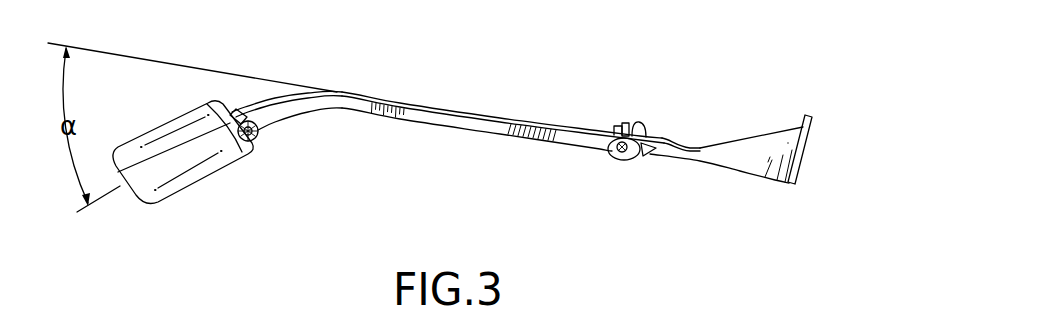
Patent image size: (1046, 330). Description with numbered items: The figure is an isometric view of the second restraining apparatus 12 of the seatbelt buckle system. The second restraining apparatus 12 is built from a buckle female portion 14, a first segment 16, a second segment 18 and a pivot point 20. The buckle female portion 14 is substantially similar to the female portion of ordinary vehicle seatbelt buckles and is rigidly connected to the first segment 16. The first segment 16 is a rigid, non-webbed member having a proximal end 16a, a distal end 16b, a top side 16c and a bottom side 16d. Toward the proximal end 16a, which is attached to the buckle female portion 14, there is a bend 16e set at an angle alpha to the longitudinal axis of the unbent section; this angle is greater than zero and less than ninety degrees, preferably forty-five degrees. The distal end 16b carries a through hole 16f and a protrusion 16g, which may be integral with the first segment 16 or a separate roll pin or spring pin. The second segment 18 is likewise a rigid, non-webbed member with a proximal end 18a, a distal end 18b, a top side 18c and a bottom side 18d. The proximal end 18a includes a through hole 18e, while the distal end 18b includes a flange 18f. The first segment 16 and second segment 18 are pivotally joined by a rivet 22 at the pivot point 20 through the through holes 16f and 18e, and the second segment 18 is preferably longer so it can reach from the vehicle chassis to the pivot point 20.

The second restraining apparatus 12 is at (460, 152).
The buckle female portion 14 is at (187, 173).
The first segment 16 is at (415, 115).
The proximal end 16a is at (261, 108).
The distal end 16b is at (588, 128).
The top side 16c is at (348, 103).
The bottom side 16d is at (395, 100).
The bend 16e is at (303, 89).
The through hole 16f is at (622, 148).
The protrusion 16g is at (642, 125).
The second segment 18 is at (702, 143).
The proximal end 18a is at (610, 129).
The distal end 18b is at (753, 160).
The top side 18c is at (657, 153).
The bottom side 18d is at (734, 149).
The through hole 18e is at (618, 127).
The flange 18f is at (778, 148).
The pivot point 20 is at (627, 128).
The rivet 22 is at (613, 160).